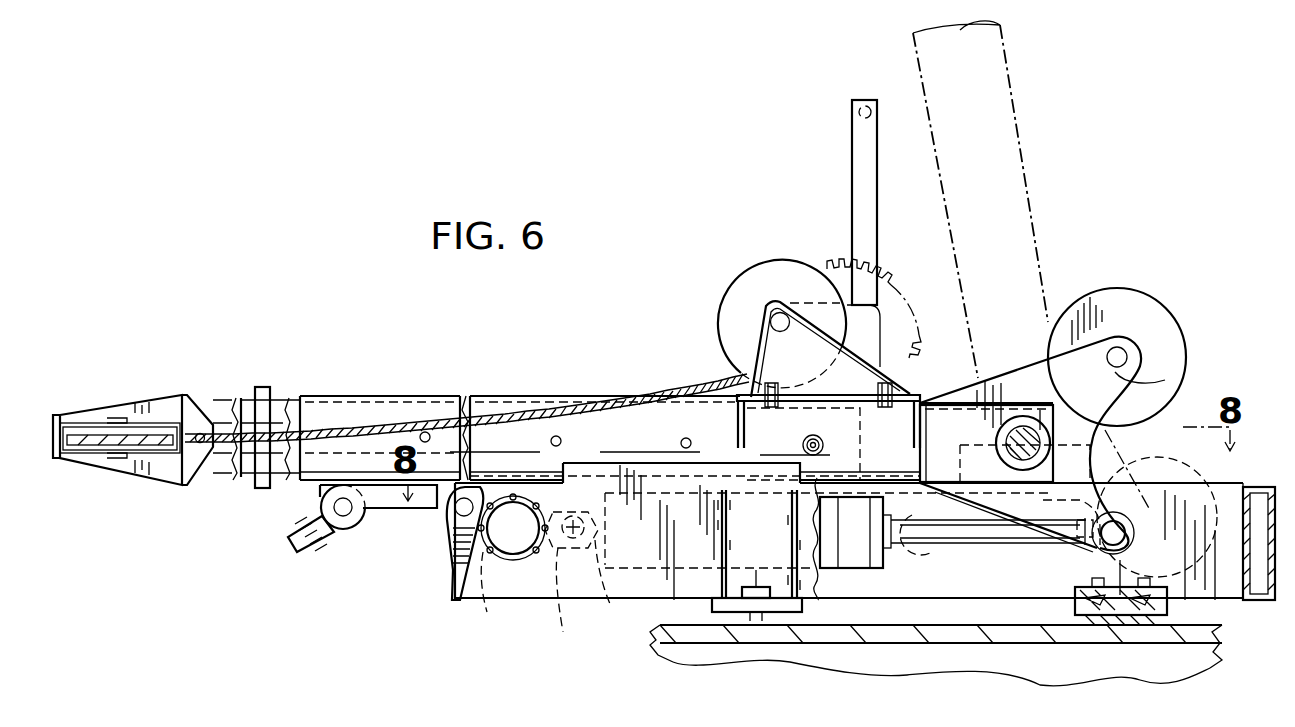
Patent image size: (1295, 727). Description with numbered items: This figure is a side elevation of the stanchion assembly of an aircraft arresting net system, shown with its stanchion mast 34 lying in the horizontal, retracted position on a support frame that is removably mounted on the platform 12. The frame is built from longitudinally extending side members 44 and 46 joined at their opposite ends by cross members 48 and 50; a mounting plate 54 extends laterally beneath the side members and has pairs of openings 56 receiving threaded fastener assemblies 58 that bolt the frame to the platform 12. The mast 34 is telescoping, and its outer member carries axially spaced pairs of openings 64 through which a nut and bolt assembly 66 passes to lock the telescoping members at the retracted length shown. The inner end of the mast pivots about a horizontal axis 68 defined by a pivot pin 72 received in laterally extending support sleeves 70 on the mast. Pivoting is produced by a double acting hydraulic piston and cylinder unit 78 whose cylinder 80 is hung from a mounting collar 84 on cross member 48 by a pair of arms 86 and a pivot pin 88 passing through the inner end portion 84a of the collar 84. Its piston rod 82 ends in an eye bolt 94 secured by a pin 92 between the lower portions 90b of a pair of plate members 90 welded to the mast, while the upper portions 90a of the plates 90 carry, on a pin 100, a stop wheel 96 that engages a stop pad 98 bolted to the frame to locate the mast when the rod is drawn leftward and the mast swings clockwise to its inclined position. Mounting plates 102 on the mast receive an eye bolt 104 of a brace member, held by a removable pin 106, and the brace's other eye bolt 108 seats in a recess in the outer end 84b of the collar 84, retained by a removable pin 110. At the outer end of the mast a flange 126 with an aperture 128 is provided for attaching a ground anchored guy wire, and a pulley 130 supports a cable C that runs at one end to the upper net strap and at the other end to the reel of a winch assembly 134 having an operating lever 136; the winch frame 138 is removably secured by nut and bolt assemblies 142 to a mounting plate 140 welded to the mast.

The platform 12 is at (961, 642).
The stanchion mast 34 is at (321, 392).
The side member 44 is at (637, 592).
The side member 46 is at (1214, 496).
The cross member 48 is at (523, 560).
The cross member 50 is at (1265, 488).
The mounting plate 54 is at (1115, 645).
The openings 56 is at (762, 630).
The threaded fastener assemblies 58 is at (753, 586).
The openings 64 is at (426, 433).
The nut and bolt assembly 66 is at (805, 443).
The horizontal axis 68 is at (1016, 455).
The support sleeves 70 is at (1001, 437).
The pivot pin 72 is at (1040, 437).
The double acting hydraulic piston and cylinder unit 78 is at (822, 576).
The cylinder 80 is at (832, 542).
The piston rod 82 is at (987, 528).
The mounting collar 84 is at (481, 599).
The inner end portion of collar 84a is at (567, 604).
The outer end of collar 84b is at (455, 536).
The arms 86 is at (610, 588).
The pivot pin 88 is at (571, 553).
The plate members 90 is at (1026, 378).
The upper portions of plates 90a is at (1118, 376).
The lower portions of plates 90b is at (1092, 546).
The pin 92 is at (1119, 538).
The eye bolt 94 is at (1106, 517).
The stop wheel 96 is at (1170, 346).
The stop pad 98 is at (1168, 594).
The pin 100 is at (1122, 348).
The mounting plates 102 is at (383, 508).
The eye bolt 104 is at (318, 524).
The removable pin 106 is at (331, 507).
The eye bolt 108 is at (456, 572).
The removable pin 110 is at (458, 512).
The flange 126 is at (193, 420).
The aperture 128 is at (200, 447).
The pulley 130 is at (125, 432).
The winch assembly 134 is at (756, 266).
The operating lever 136 is at (853, 146).
The supporting frame 138 is at (772, 347).
The mounting plate 140 is at (926, 401).
The nut and bolt assemblies 142 is at (768, 394).
The cable C is at (386, 426).